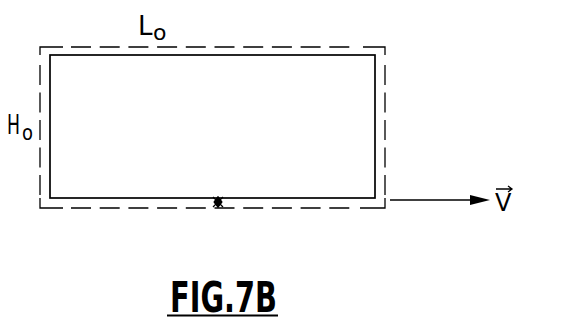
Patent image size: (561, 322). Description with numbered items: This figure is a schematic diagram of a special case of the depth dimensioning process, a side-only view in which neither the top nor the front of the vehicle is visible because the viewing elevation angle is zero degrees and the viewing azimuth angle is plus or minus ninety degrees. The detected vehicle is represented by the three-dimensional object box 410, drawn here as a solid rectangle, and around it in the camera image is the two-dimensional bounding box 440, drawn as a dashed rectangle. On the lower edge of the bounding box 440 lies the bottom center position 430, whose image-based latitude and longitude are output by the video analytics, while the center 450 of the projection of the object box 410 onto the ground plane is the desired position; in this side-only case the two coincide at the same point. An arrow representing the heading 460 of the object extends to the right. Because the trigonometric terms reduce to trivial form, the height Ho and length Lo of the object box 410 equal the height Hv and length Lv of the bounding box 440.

The three-dimensional object box 410 is at (223, 54).
The bottom center position 430 is at (218, 207).
The two-dimensional bounding box 440 is at (371, 47).
The center 450 is at (218, 198).
The heading 460 is at (441, 199).